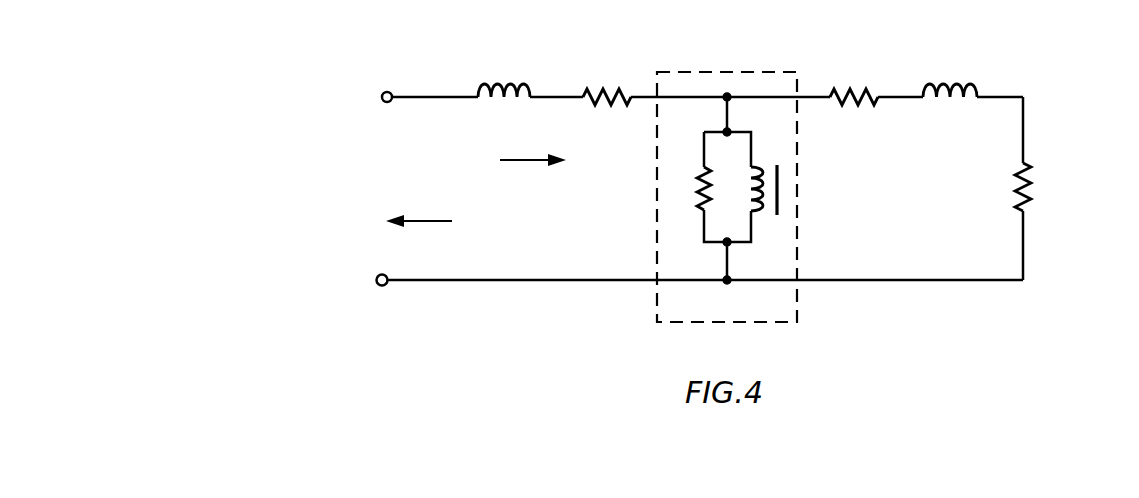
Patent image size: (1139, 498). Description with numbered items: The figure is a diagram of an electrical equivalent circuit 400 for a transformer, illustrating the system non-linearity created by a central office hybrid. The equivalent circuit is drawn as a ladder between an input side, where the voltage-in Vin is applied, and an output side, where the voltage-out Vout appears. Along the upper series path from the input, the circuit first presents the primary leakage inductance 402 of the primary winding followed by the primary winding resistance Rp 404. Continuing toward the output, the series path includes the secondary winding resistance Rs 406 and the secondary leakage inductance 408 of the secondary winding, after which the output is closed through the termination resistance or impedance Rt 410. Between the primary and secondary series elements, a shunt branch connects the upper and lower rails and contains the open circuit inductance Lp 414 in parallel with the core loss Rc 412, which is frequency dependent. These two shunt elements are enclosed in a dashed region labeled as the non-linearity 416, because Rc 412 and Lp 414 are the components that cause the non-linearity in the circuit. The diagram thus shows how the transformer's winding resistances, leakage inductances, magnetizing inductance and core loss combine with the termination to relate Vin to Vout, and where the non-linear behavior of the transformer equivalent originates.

The non-linear circuit model 400 is at (1085, 58).
The leakage inductance Ls(p) 402 is at (493, 98).
The primary winding resistance Rp 404 is at (590, 92).
The secondary winding resistance Rs 406 is at (871, 100).
The leakage inductance Ls(s) 408 is at (945, 98).
The termination resistance Rt 410 is at (1017, 198).
The core loss Rc 412 is at (700, 196).
The open circuit inductance Lp 414 is at (756, 192).
The non-linearity 416 is at (722, 71).